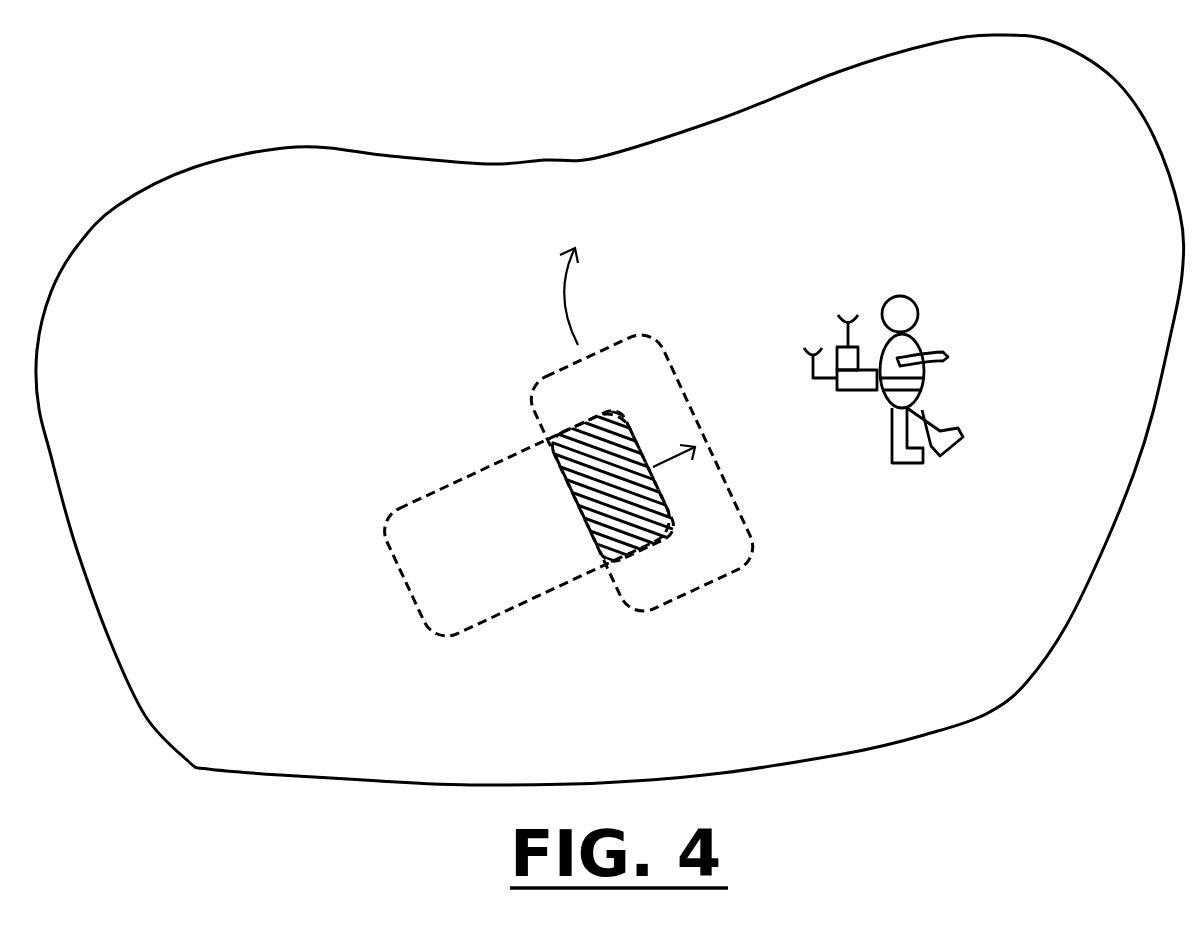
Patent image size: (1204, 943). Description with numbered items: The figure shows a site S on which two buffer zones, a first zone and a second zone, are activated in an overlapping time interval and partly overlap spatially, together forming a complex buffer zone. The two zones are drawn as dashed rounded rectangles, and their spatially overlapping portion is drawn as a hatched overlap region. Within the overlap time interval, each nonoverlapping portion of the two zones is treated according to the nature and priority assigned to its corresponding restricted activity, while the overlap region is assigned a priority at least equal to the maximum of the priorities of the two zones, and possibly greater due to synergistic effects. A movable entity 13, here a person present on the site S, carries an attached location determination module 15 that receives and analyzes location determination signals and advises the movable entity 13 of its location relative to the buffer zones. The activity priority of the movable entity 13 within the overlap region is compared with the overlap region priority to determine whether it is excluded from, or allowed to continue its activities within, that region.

The site S is at (610, 410).
The movable entity 13 is at (930, 300).
The location determination module 15 is at (850, 293).